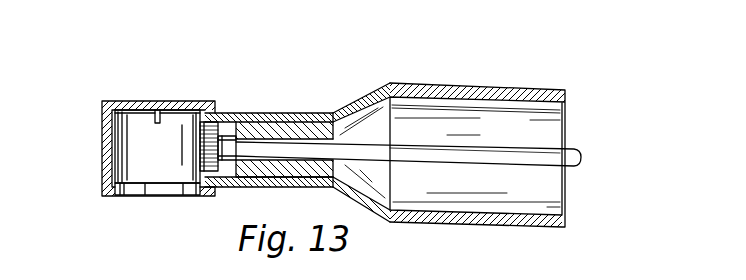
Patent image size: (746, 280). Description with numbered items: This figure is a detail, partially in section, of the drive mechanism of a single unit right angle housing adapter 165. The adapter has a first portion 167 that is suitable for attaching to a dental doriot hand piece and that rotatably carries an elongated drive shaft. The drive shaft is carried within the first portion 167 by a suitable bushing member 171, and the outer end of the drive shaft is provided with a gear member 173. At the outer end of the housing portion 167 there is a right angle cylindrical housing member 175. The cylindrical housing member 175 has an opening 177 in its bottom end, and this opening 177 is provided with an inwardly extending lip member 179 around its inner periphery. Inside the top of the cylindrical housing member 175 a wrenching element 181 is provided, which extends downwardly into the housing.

The right angle housing adapter 165 is at (310, 92).
The first portion 167 is at (358, 102).
The bushing member 171 is at (297, 172).
The gear member 173 is at (229, 128).
The right angle cylindrical housing member 175 is at (103, 150).
The opening 177 is at (122, 193).
The lip member 179 is at (205, 193).
The wrenching element 181 is at (155, 122).